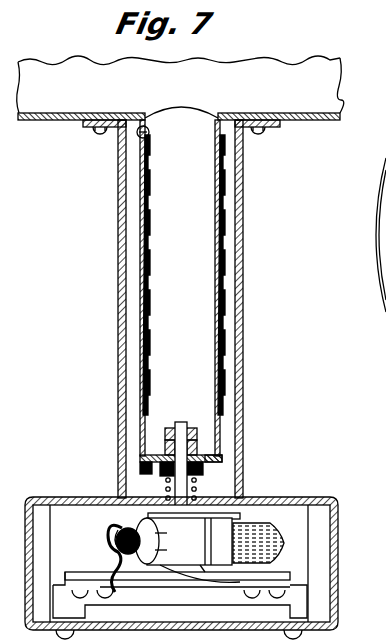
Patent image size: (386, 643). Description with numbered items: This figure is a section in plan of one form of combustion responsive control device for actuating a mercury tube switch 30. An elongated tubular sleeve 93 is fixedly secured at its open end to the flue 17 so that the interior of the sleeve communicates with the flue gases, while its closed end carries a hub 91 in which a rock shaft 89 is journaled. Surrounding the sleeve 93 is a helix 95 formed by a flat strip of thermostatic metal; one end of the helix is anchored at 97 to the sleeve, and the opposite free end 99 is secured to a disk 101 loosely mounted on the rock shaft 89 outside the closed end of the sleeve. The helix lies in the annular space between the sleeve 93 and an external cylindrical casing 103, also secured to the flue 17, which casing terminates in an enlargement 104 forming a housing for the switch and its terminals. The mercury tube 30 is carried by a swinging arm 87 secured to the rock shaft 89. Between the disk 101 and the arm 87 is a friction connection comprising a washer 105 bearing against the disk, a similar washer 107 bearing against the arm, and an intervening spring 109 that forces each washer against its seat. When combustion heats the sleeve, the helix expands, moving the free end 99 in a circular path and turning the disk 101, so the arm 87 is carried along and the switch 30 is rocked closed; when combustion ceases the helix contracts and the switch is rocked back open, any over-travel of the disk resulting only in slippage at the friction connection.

The flue 17 is at (300, 106).
The anchor point of helix 97 is at (149, 130).
The helix 95 is at (140, 174).
The elongated tubular sleeve 93 is at (225, 254).
The external cylindrical casing 103 is at (243, 326).
The hub 91 is at (192, 432).
The free end of helix 99 is at (140, 467).
The disk 101 is at (222, 462).
The washer 105 is at (165, 475).
The rock shaft 89 is at (187, 478).
The spring 109 is at (195, 492).
The washer 107 is at (150, 514).
The swinging arm 87 is at (227, 514).
The mercury tube switch 30 is at (272, 558).
The enlargement 104 is at (338, 561).